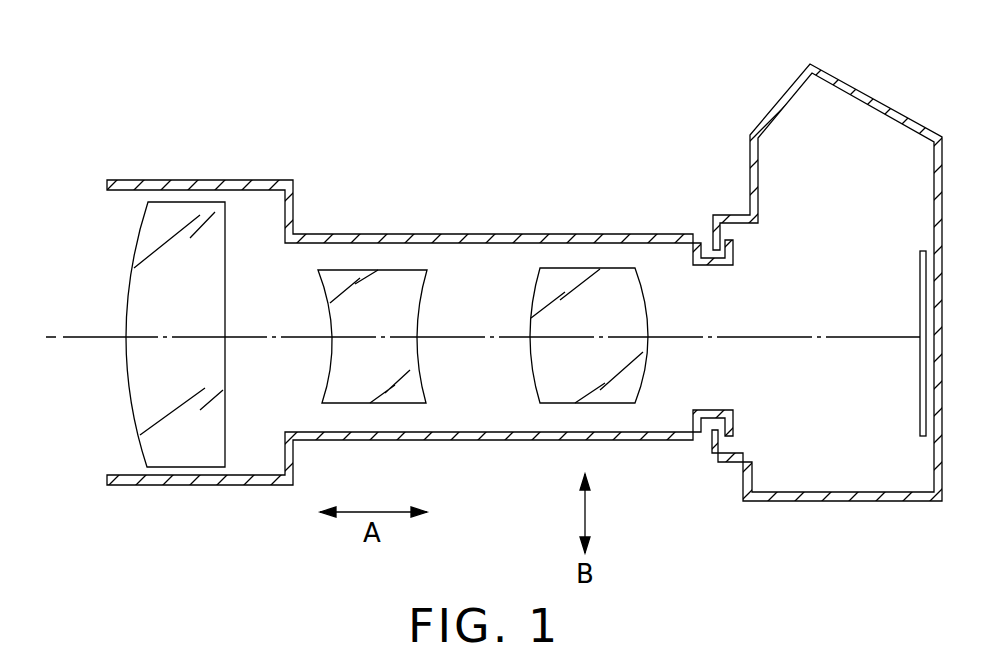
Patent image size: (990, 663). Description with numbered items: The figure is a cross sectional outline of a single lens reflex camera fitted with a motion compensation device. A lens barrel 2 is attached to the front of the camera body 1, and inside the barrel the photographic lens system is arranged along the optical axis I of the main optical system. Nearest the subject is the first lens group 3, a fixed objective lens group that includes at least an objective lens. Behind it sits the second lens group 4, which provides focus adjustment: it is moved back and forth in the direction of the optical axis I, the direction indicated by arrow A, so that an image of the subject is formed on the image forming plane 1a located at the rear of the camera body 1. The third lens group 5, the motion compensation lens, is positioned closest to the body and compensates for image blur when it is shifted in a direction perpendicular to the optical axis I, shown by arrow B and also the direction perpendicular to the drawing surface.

The camera body 1 is at (910, 62).
The image forming plane 1a is at (926, 400).
The lens barrel 2 is at (424, 166).
The first lens group 3 is at (146, 437).
The second lens group 4 is at (342, 379).
The third lens group 5 is at (628, 377).
The optical axis I is at (105, 336).